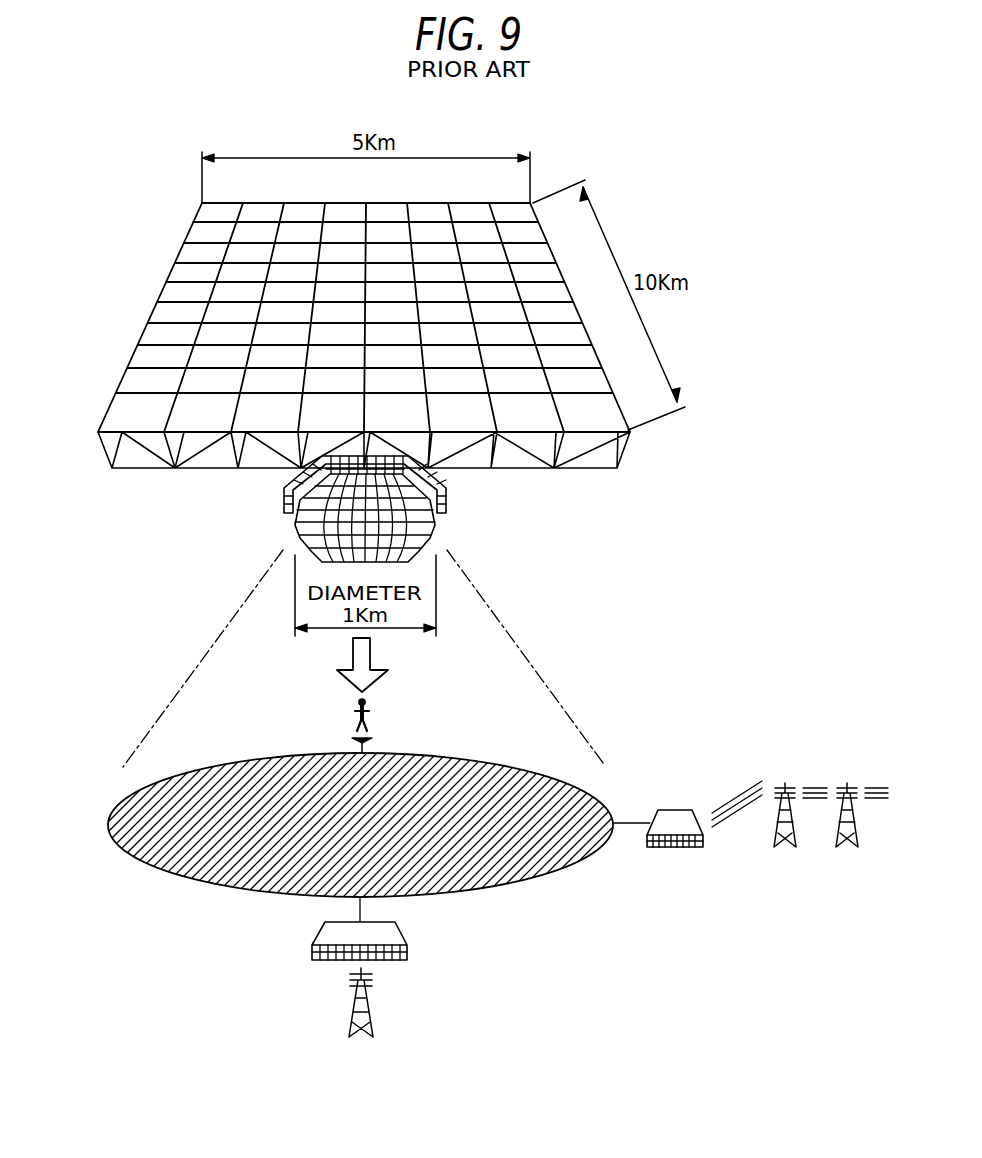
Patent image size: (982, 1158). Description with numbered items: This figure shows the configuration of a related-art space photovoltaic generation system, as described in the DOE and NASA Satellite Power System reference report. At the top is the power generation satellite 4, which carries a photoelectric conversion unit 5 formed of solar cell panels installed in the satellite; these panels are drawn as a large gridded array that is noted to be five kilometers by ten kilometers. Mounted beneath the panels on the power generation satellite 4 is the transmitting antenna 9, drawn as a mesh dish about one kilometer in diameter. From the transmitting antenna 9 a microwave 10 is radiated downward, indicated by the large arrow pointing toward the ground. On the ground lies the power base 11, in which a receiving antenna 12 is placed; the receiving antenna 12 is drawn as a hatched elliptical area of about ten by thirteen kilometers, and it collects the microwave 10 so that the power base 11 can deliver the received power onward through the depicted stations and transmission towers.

The power generation satellite 4 is at (730, 198).
The photoelectric conversion unit 5 is at (163, 284).
The transmitting antenna 9 is at (293, 523).
The microwave 10 is at (372, 655).
The power base 11 is at (697, 1065).
The receiving antenna 12 is at (566, 866).